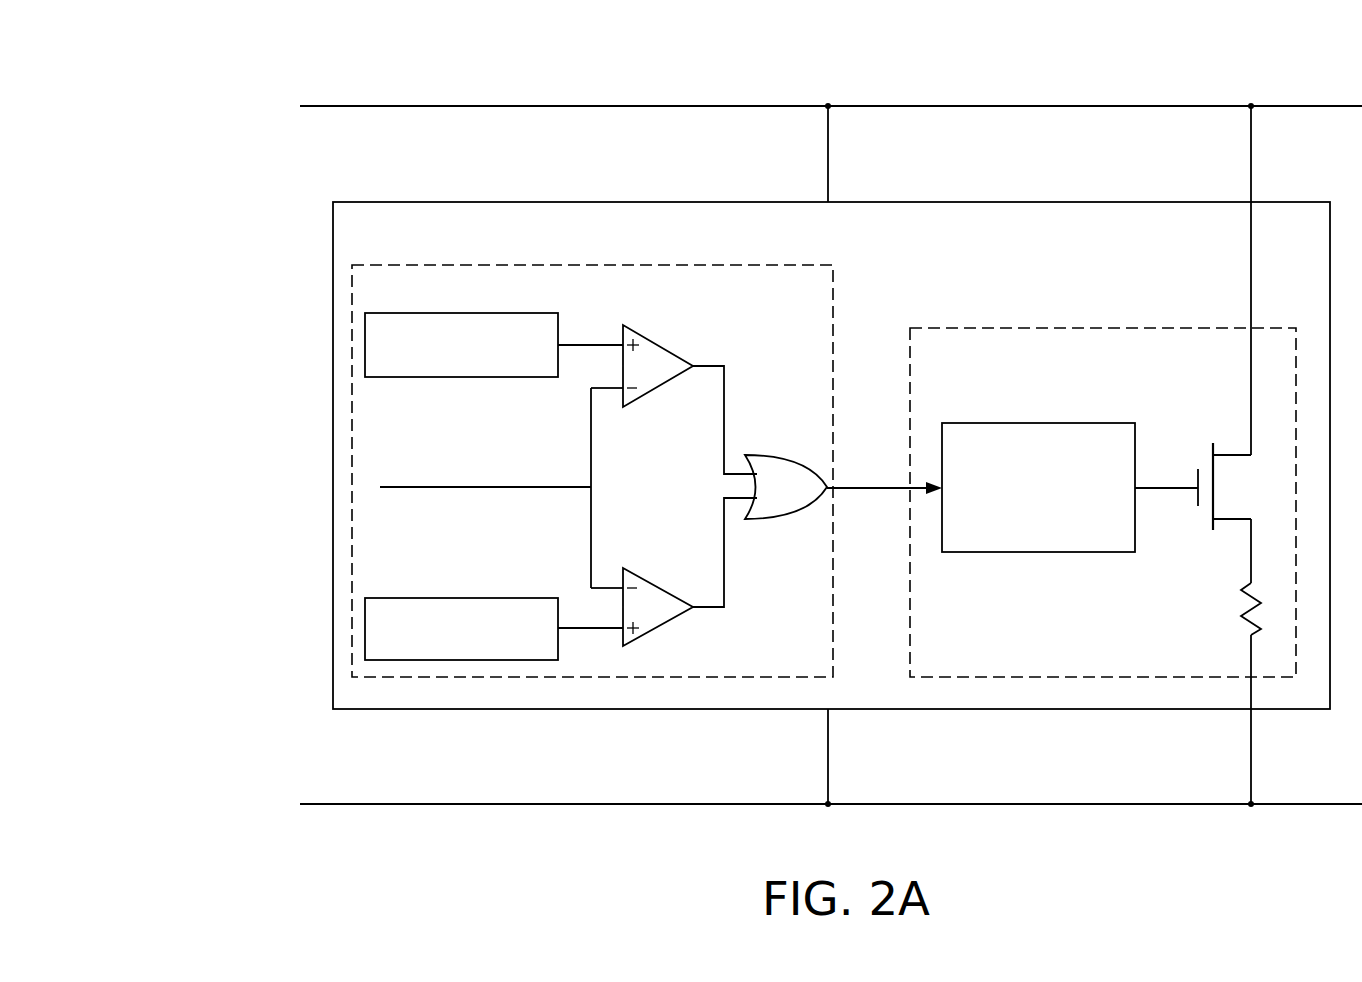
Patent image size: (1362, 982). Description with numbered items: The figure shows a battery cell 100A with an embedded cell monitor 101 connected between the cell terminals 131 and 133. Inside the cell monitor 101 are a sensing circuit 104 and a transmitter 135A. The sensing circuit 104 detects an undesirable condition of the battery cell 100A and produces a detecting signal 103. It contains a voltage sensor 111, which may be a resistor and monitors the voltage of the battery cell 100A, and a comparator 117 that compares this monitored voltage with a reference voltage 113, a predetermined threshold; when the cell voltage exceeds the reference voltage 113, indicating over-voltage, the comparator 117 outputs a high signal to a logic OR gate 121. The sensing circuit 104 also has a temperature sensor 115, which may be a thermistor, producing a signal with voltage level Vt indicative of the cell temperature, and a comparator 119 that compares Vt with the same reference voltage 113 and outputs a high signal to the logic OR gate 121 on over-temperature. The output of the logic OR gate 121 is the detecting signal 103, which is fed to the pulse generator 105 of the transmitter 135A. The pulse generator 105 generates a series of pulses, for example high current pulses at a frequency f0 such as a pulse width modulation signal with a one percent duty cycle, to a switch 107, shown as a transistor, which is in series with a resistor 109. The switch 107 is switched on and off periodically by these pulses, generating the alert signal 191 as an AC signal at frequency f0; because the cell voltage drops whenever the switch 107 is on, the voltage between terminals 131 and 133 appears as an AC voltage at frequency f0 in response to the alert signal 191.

The battery cell 100A is at (252, 134).
The embedded cell monitor 101 is at (718, 202).
The detecting signal 103 is at (845, 487).
The sensing circuit 104 is at (525, 265).
The pulse generator 105 is at (1040, 423).
The switch 107 is at (1213, 527).
The resistor 109 is at (1243, 620).
The voltage sensor 111 is at (456, 313).
The reference voltage 113 is at (458, 487).
The temperature sensor 115 is at (456, 598).
The comparator 117 is at (655, 343).
The comparator 119 is at (655, 584).
The logic OR gate 121 is at (766, 455).
The terminal 131 is at (462, 106).
The terminal 133 is at (457, 806).
The transmitter 135A is at (1030, 328).
The alert signal 191 is at (1252, 166).